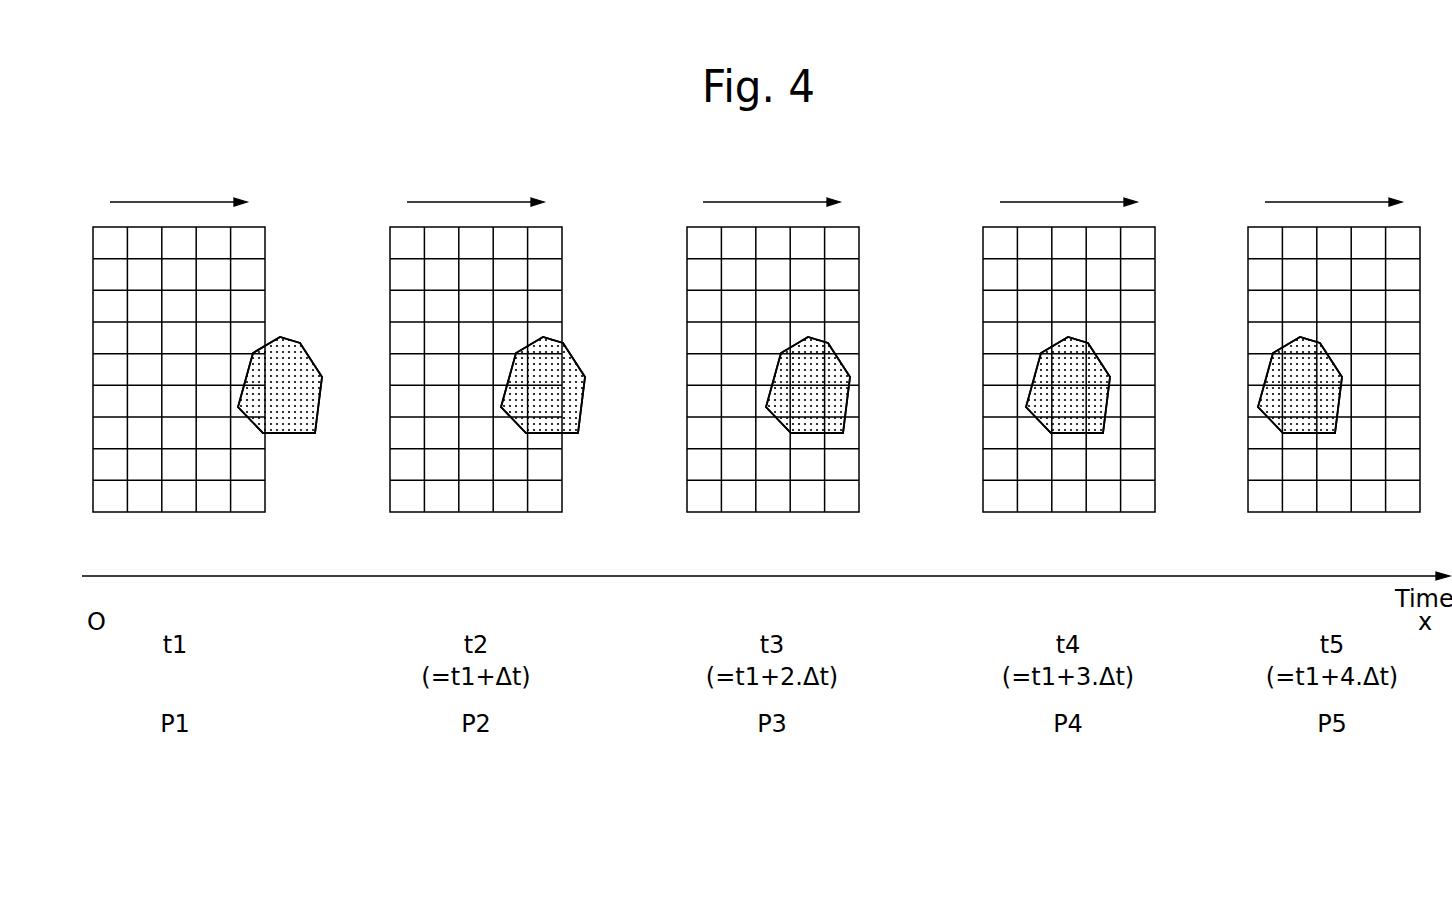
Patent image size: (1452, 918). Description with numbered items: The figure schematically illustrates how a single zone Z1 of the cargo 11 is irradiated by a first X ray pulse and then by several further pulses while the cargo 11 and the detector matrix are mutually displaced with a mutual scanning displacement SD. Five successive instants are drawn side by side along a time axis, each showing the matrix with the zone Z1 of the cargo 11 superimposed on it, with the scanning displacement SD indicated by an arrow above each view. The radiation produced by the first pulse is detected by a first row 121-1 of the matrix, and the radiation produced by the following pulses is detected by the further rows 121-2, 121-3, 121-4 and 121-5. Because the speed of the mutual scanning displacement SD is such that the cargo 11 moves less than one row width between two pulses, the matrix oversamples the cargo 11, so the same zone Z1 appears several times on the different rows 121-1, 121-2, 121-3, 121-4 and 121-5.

The cargo 11 is at (297, 370).
The zone Z1 is at (257, 405).
The first row 121-1 is at (253, 240).
The second row 121-2 is at (512, 302).
The third row 121-3 is at (770, 303).
The fourth row 121-4 is at (1027, 238).
The fifth row 121-5 is at (1272, 407).
The mutual scanning displacement SD is at (156, 202).